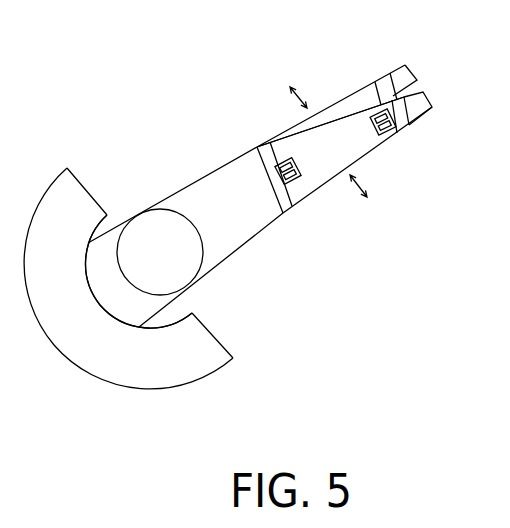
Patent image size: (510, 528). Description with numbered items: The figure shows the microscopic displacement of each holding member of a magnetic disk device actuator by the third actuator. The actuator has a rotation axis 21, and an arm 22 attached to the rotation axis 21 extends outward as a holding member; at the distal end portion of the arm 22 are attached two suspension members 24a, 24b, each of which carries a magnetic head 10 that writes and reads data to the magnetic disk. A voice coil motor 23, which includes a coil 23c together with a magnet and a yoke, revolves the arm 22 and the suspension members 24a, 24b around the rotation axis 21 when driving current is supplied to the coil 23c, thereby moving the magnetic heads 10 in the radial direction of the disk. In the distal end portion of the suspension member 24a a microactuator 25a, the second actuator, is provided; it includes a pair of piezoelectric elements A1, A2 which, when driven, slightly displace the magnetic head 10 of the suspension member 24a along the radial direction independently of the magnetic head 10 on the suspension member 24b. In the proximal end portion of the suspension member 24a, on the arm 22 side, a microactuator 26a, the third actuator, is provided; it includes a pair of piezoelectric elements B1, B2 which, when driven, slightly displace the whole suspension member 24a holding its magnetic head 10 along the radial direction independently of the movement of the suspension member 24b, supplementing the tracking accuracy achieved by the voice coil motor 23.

The magnetic head 10 is at (404, 75).
The rotation axis 21 is at (145, 228).
The arm 22 is at (233, 240).
The voice coil motor 23 is at (118, 373).
The coil 23c is at (133, 312).
The suspension member 24a is at (324, 168).
The suspension member 24b is at (335, 114).
The microactuator (second actuator) 25a is at (378, 187).
The microactuator (third actuator) 26a is at (278, 100).
The piezoelectric element A1 is at (378, 104).
The piezoelectric element A2 is at (395, 132).
The piezoelectric element B1 is at (262, 147).
The piezoelectric element B2 is at (300, 181).